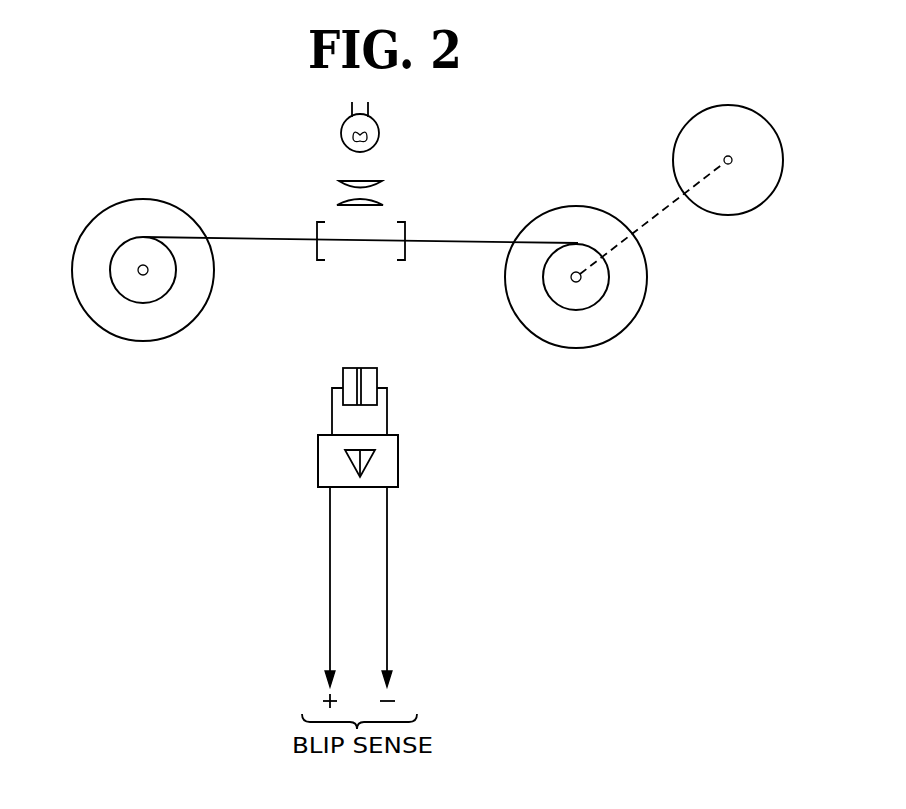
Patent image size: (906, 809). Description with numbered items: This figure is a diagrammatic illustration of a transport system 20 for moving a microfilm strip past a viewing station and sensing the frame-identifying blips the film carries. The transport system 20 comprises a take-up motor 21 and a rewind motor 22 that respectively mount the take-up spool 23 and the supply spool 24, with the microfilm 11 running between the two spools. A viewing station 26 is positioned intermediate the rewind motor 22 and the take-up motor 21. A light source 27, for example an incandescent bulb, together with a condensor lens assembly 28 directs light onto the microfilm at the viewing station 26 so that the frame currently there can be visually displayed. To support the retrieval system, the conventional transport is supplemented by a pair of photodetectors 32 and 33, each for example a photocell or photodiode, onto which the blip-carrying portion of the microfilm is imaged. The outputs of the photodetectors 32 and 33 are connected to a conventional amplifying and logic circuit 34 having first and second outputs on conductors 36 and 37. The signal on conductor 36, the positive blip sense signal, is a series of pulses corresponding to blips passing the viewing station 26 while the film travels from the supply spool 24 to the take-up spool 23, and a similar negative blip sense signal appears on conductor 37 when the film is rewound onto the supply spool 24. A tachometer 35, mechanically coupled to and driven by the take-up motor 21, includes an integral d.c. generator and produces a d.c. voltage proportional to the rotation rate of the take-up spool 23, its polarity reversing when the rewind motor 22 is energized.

The transport system 20 is at (147, 161).
The magnetic tape 11 is at (468, 240).
The take-up motor 21 is at (590, 349).
The rewind motor 22 is at (80, 268).
The take-up spool 23 is at (580, 244).
The supply spool 24 is at (143, 302).
The viewing station 26 is at (316, 232).
The light source 27 is at (380, 131).
The condensor lens assembly 28 is at (378, 196).
The photodetector 32 is at (343, 370).
The photodetector 33 is at (377, 378).
The amplifying and logic circuit 34 is at (318, 474).
The tachometer 35 is at (765, 113).
The conductor 36 is at (330, 585).
The conductor 37 is at (387, 611).